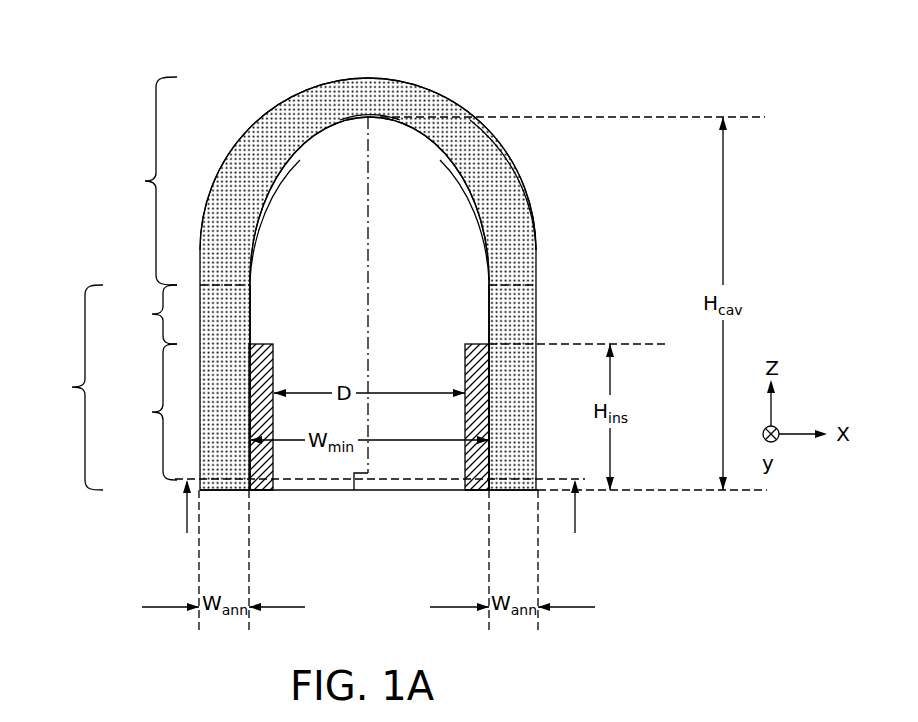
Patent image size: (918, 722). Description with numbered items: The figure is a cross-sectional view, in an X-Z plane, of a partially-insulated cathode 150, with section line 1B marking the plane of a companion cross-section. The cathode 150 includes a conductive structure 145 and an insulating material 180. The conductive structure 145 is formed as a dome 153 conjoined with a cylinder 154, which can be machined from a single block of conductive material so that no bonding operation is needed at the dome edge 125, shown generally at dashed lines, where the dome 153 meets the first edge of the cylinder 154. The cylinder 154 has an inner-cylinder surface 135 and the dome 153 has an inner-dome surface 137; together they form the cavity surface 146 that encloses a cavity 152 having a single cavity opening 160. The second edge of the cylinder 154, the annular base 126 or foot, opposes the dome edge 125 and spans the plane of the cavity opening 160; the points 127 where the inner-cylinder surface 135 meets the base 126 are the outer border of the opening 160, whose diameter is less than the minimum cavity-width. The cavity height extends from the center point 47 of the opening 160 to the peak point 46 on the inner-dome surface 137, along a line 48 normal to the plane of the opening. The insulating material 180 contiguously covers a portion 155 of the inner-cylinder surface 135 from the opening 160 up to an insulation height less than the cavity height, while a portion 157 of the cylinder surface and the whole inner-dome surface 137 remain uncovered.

The partially-insulated cathode 150 is at (543, 100).
The dome edge 125 is at (237, 284).
The conductive structure 145 is at (526, 196).
The cavity surface 146 is at (252, 260).
The inner-dome surface 137 is at (462, 178).
The inner-cylinder surface 135 is at (250, 328).
The insulating material 180 is at (274, 377).
The cavity 152 is at (420, 299).
The peak point 46 is at (362, 118).
The line from center point to peak point 48 is at (371, 208).
The center point of the cavity opening 47 is at (365, 491).
The cavity opening 160 is at (362, 519).
The base 126 is at (205, 493).
The points 127 is at (250, 494).
The dome 153 is at (140, 181).
The cylinder 154 is at (67, 387).
The portion of the cavity surface covered by insulating material 155 is at (143, 412).
The uncovered portion of the cavity surface 157 is at (146, 314).
The section line 1B- 1B is at (381, 521).